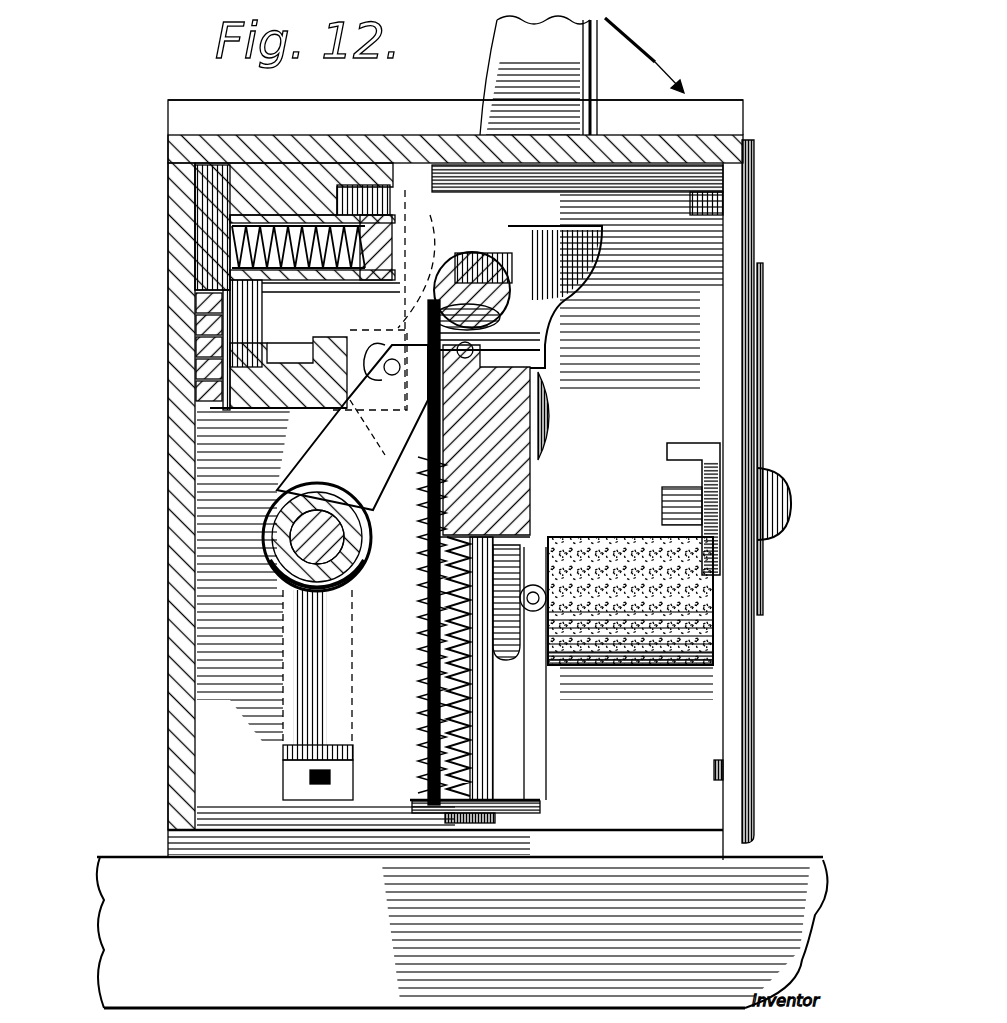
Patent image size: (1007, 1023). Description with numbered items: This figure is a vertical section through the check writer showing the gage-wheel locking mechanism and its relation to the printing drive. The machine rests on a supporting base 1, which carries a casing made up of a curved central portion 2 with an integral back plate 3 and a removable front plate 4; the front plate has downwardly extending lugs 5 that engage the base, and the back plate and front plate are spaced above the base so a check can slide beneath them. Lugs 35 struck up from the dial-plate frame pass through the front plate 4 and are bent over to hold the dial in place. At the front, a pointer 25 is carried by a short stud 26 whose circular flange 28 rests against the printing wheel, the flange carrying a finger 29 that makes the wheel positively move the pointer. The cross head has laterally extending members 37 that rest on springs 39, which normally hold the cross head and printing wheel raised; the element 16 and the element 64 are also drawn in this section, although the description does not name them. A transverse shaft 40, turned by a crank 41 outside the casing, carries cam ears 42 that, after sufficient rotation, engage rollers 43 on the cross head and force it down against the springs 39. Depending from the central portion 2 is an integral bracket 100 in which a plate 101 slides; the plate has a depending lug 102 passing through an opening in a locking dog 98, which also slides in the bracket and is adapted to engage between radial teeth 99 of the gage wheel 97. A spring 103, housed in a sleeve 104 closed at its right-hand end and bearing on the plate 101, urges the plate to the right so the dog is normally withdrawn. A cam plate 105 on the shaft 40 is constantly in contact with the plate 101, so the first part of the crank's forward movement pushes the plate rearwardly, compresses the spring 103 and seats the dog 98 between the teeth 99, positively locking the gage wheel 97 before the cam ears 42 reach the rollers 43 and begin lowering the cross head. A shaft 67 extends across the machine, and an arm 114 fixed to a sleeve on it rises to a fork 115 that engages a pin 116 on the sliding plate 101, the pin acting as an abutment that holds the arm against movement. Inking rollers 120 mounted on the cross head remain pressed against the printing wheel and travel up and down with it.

The supporting base 1 is at (462, 932).
The curved central portion 2 is at (712, 136).
The back plate 3 is at (180, 567).
The removable front plate 4 is at (733, 317).
The downwardly extending lugs 5 is at (733, 857).
The slide block 16 is at (510, 488).
The pointer 25 is at (758, 420).
The short stud 26 is at (663, 514).
The circular flange 28 is at (705, 482).
The finger 29 is at (677, 445).
The lugs 35 is at (713, 200).
The laterally extending members 37 is at (556, 412).
The springs 39 is at (467, 730).
The transverse shaft 40 is at (552, 303).
The crank 41 is at (582, 75).
The cam ears 42 is at (513, 283).
The rollers 43 is at (540, 320).
The bottom plate 64 is at (470, 803).
The shaft 67 is at (357, 577).
The gage wheel 97 is at (205, 325).
The locking dog 98 is at (223, 343).
The radial teeth 99 is at (200, 310).
The bracket 100 is at (273, 207).
The plate 101 is at (299, 351).
The depending lug 102 is at (285, 355).
The spring 103 is at (197, 246).
The sleeve 104 is at (380, 213).
The cam plate 105 is at (540, 340).
The arm 114 is at (352, 427).
The fork 115 is at (389, 378).
The pin 116 is at (306, 614).
The inking rollers 120 is at (700, 600).